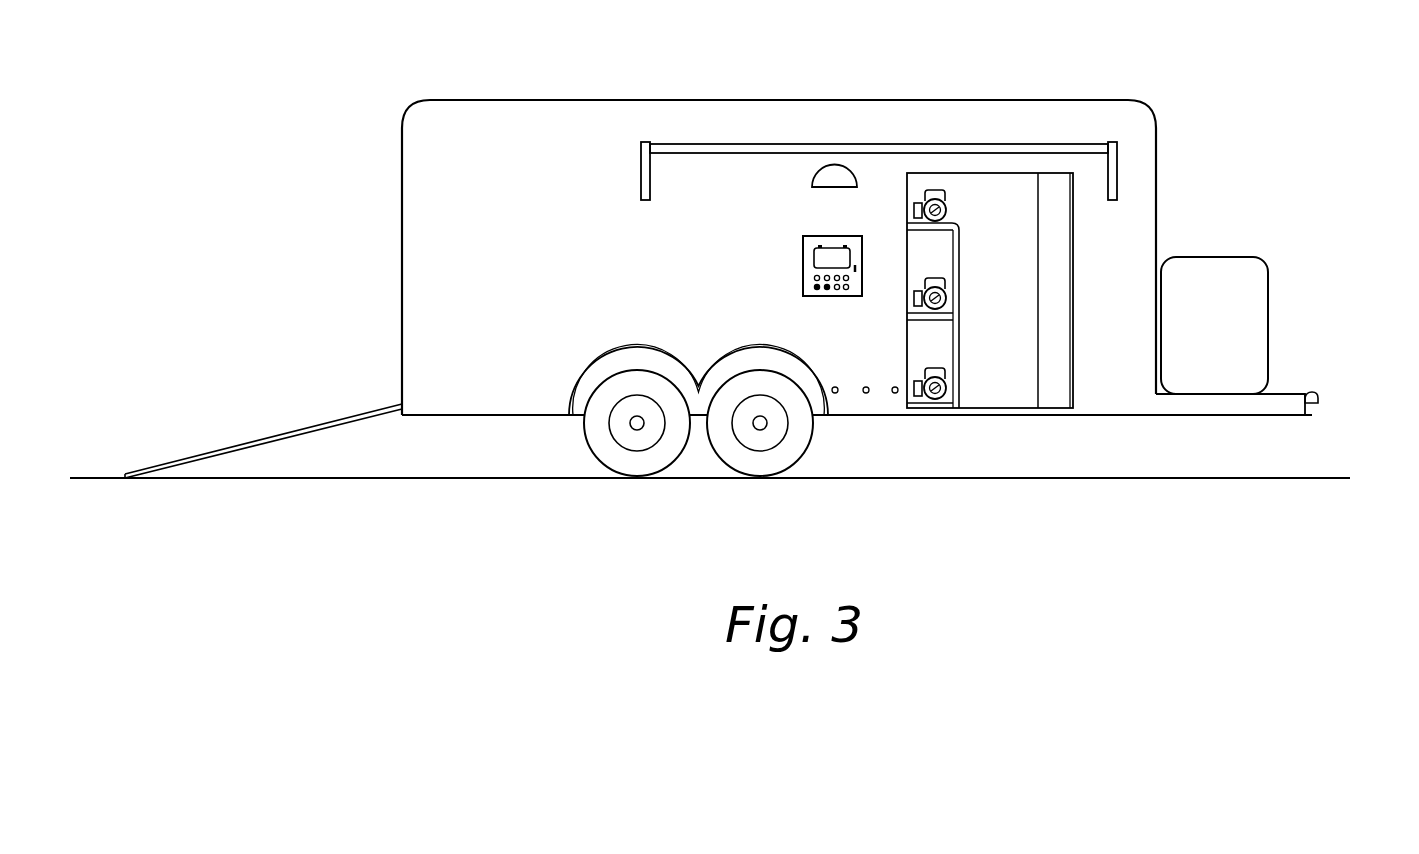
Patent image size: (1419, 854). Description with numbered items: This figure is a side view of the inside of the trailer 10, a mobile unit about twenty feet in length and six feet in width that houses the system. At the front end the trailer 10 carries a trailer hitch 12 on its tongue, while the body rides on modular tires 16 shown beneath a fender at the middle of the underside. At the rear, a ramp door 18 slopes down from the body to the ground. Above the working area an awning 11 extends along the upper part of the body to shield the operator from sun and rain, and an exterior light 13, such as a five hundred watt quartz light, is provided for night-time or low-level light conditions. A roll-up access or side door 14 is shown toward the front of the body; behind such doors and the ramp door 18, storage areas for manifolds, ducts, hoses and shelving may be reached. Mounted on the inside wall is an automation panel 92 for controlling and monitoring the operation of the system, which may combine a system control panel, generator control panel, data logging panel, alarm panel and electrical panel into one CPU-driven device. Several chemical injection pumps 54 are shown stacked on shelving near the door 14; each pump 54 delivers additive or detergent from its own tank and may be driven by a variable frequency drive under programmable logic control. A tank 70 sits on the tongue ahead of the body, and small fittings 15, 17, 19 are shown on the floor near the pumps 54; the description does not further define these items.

The trailer 10 is at (1138, 36).
The awning 11 is at (684, 155).
The trailer hitch 12 is at (1309, 391).
The exterior light 13 is at (811, 185).
The roll-up access door 14 is at (1062, 258).
The fitting 15 is at (835, 387).
The modular tires 16 is at (582, 437).
The fitting 17 is at (866, 387).
The ramp door 18 is at (282, 433).
The fitting 19 is at (895, 387).
The chemical injection pump 54 is at (947, 208).
The tank 70 is at (1214, 256).
The automation panel 92 is at (803, 266).